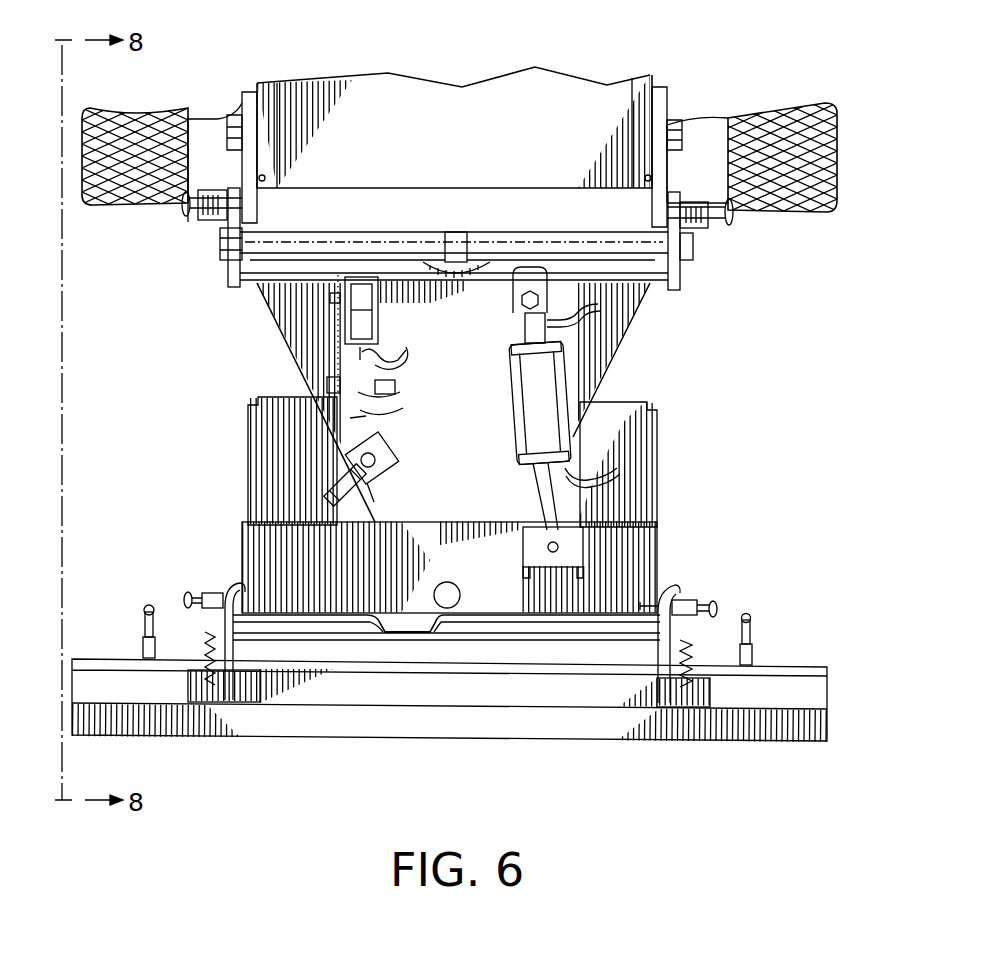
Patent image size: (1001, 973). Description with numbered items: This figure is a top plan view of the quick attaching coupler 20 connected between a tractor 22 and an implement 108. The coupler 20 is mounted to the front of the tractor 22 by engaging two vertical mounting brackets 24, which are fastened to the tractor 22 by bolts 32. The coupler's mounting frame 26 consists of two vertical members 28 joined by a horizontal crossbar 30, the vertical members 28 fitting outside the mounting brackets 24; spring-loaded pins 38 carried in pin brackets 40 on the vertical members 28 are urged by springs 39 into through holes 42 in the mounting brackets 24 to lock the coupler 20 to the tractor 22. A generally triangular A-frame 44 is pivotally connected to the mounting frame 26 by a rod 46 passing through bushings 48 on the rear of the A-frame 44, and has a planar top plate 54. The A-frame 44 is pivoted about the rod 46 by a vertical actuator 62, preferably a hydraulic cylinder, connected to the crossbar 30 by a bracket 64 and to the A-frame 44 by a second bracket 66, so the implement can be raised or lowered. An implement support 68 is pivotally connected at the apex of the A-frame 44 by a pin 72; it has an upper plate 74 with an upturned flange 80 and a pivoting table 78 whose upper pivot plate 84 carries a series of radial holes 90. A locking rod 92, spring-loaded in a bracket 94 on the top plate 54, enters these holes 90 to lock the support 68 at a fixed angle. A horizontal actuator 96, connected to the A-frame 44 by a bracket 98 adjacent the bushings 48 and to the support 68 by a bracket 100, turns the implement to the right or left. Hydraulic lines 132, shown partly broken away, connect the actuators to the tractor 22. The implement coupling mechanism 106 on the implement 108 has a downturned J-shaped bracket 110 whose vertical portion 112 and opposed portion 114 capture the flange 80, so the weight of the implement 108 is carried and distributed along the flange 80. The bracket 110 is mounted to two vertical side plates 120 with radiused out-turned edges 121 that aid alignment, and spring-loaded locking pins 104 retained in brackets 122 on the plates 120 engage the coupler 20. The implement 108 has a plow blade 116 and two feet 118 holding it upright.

The quick attaching coupler 20 is at (684, 387).
The tractor 22 is at (432, 68).
The mounting brackets 24 is at (242, 170).
The mounting frame 26 is at (683, 285).
The vertical members 28 is at (227, 262).
The crossbar 30 is at (380, 262).
The bolts 32 is at (227, 133).
The spring-loaded pins 38 is at (182, 208).
The springs 39 is at (223, 192).
The pin brackets 40 is at (207, 221).
The through holes 42 is at (260, 177).
The A-frame 44 is at (273, 313).
The rod 46 is at (219, 243).
The bushings 48 is at (303, 217).
The top plate 54 is at (613, 337).
The vertical actuator 62 is at (380, 360).
The bracket 64 is at (387, 292).
The second bracket 66 is at (387, 393).
The implement support 68 is at (657, 547).
The pin 72 is at (450, 581).
The upper plate 74 is at (460, 520).
The pivoting table 78 is at (657, 453).
The upturned flange 80 is at (390, 597).
The upper pivot plate 84 is at (250, 447).
The radial holes 90 is at (340, 472).
The locking rod 92 is at (359, 429).
The bracket 94 is at (400, 477).
The horizontal actuator 96 is at (507, 395).
The bracket 98 is at (517, 285).
The bracket 100 is at (522, 545).
The locking pins 104 is at (183, 600).
The implement coupling mechanism 106 is at (180, 578).
The implement 108 is at (312, 745).
The J-shaped bracket 110 is at (280, 613).
The vertical portion 112 is at (455, 637).
The opposed portion 114 is at (625, 617).
The plow blade 116 is at (715, 742).
The feet 118 is at (142, 617).
The vertical side plates 120 is at (190, 613).
The radiused out-turned edges 121 is at (233, 583).
The brackets 122 is at (208, 592).
The hydraulic lines 132 is at (420, 360).